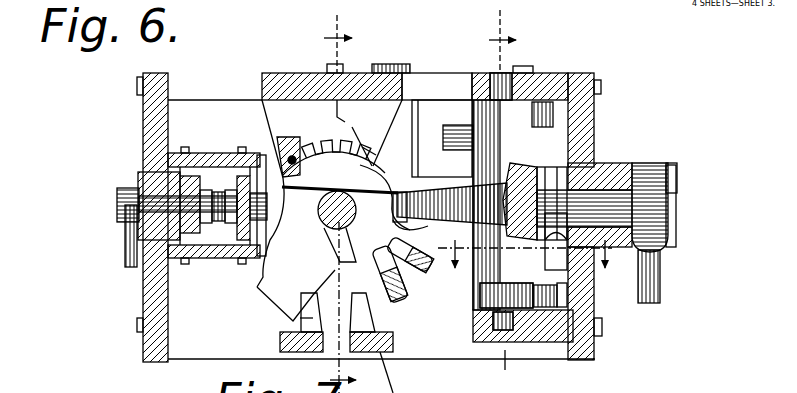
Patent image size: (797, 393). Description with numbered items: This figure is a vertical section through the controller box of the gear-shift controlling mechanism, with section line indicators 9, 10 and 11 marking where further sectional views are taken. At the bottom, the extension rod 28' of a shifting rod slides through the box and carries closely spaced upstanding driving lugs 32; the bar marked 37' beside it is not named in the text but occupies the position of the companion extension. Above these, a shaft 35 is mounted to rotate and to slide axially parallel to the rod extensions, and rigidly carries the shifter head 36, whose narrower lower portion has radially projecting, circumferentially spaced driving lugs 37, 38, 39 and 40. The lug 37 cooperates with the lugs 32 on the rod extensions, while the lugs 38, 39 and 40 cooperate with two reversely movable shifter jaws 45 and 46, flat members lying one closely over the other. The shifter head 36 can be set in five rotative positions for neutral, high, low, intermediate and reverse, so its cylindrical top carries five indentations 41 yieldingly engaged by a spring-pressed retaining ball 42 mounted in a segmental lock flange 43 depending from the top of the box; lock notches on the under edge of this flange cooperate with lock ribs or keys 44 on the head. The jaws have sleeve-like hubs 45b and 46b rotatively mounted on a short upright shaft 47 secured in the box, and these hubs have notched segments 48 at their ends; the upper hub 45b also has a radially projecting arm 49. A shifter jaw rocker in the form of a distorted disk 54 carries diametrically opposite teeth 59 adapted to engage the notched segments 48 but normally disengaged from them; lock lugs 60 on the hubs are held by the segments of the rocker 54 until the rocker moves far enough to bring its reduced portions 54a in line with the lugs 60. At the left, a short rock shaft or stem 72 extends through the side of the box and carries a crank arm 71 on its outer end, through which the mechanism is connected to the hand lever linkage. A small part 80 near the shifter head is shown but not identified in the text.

The section line 9- 9 is at (336, 202).
The section line 10- 10 is at (496, 190).
The section line 11- 11 is at (534, 259).
The extension rod 28' is at (309, 344).
The driving lugs 32 is at (310, 320).
The shaft 35 is at (321, 220).
The shifter head 36 is at (334, 154).
The driving lug 37 is at (280, 295).
The lever arm 37' is at (402, 372).
The driving lug 38 is at (378, 267).
The driving lug 39 is at (400, 247).
The driving lug 40 is at (385, 205).
The indentations 41 is at (374, 166).
The spring-pressed retaining ball 42 is at (296, 188).
The segmental lock flange 43 is at (272, 116).
The lock ribs 44 is at (376, 149).
The shifter jaw 45 is at (452, 192).
The sleeve-like hub 45b is at (595, 135).
The shifter jaw 46 is at (432, 222).
The sleeve-like hub 46b is at (483, 272).
The upright shaft 47 is at (517, 88).
The notched segments 48 is at (595, 105).
The radially projecting arm 49 is at (460, 125).
The shifter jaw rocker 54 is at (555, 215).
The reduced portions 54a is at (670, 163).
The teeth 59 is at (634, 243).
The lock lugs 60 is at (560, 278).
The crank arm 71 is at (126, 257).
The rock shaft 72 is at (117, 203).
The hub 80 is at (332, 236).